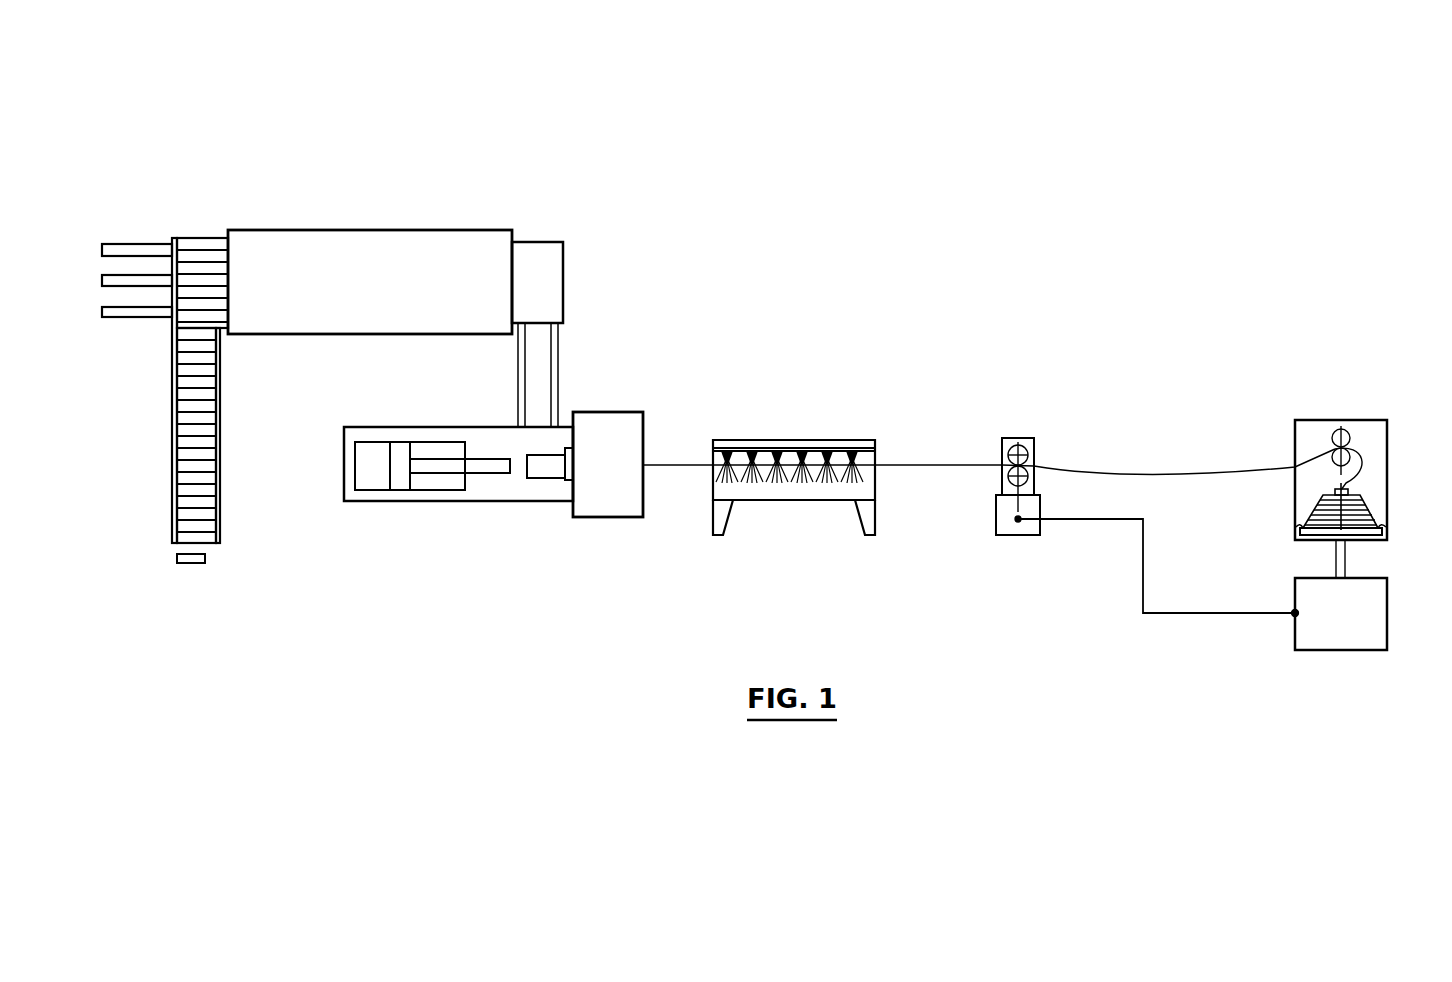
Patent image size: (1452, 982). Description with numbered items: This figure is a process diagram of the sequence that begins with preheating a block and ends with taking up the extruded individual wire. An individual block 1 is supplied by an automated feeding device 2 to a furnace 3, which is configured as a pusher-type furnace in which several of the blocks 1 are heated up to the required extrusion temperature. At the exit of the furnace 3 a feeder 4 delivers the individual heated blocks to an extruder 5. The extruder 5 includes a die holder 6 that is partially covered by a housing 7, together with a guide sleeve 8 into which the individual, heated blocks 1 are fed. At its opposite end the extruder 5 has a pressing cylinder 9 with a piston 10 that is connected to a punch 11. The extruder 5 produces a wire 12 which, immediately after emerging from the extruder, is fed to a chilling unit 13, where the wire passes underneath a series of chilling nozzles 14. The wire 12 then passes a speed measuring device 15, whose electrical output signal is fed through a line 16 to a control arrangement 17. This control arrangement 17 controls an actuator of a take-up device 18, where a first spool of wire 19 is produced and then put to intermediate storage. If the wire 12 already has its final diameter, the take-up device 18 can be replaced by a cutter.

The block 1 is at (190, 564).
The automated feeding device 2 is at (186, 428).
The furnace 3 is at (366, 248).
The feeder 4 is at (540, 355).
The extruder 5 is at (410, 397).
The die holder 6 is at (568, 476).
The housing 7 is at (614, 498).
The guide sleeve 8 is at (540, 470).
The pressing cylinder 9 is at (371, 478).
The piston 10 is at (400, 470).
The punch 11 is at (485, 465).
The wire 12 is at (678, 462).
The chilling unit 13 is at (820, 405).
The chilling nozzles 14 is at (758, 502).
The speed measuring device 15 is at (1030, 406).
The line 16 is at (1143, 578).
The control arrangement 17 is at (1340, 614).
The take-up device 18 is at (1342, 407).
The first spool of wire 19 is at (1374, 503).